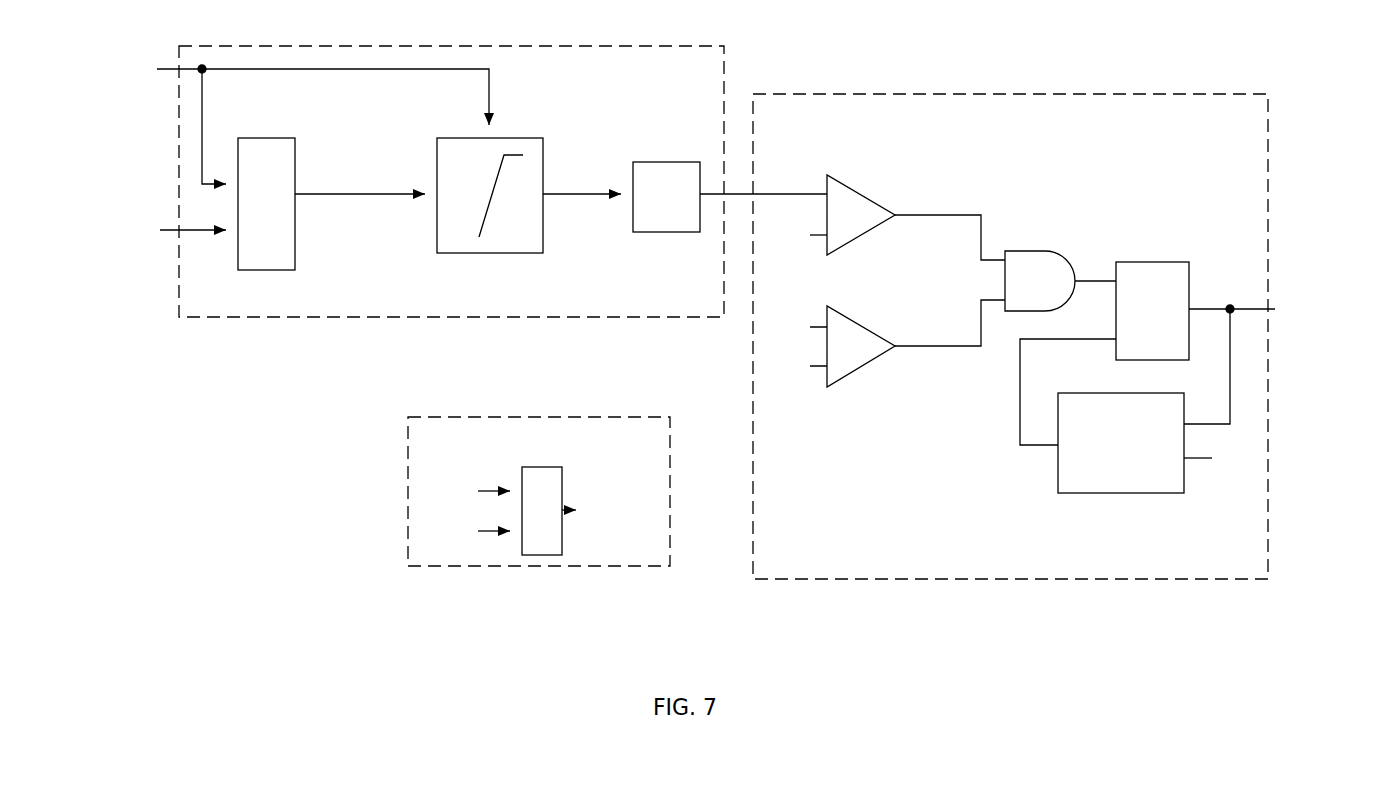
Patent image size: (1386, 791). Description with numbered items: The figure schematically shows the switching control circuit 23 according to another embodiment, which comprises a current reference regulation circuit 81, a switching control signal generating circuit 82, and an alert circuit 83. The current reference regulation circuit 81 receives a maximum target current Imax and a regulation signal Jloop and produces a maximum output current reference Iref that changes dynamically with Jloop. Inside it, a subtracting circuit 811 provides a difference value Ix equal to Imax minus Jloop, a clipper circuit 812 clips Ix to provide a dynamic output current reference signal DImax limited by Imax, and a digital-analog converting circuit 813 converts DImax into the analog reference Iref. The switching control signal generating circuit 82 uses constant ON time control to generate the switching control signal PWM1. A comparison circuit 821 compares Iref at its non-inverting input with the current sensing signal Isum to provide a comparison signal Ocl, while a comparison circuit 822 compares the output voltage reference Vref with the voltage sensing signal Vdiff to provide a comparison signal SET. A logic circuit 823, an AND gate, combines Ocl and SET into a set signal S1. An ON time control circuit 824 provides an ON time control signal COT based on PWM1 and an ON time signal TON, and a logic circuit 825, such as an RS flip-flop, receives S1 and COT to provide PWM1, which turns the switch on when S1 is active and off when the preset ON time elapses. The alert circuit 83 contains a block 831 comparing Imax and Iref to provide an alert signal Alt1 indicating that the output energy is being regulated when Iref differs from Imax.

The switching control circuit 23 is at (1098, 52).
The current reference regulation circuit 81 is at (572, 46).
The subtracting circuit 811 is at (258, 138).
The clipper circuit 812 is at (507, 138).
The digital-analog converting circuit 813 is at (655, 162).
The switching control signal generating circuit 82 is at (903, 94).
The comparison circuit 821 is at (850, 186).
The comparison circuit 822 is at (840, 312).
The logic circuit 823 is at (1045, 251).
The ON time control circuit 824 is at (1081, 494).
The logic circuit 825 is at (1170, 262).
The alert circuit 83 is at (670, 462).
The inequality comparator 831 is at (550, 467).